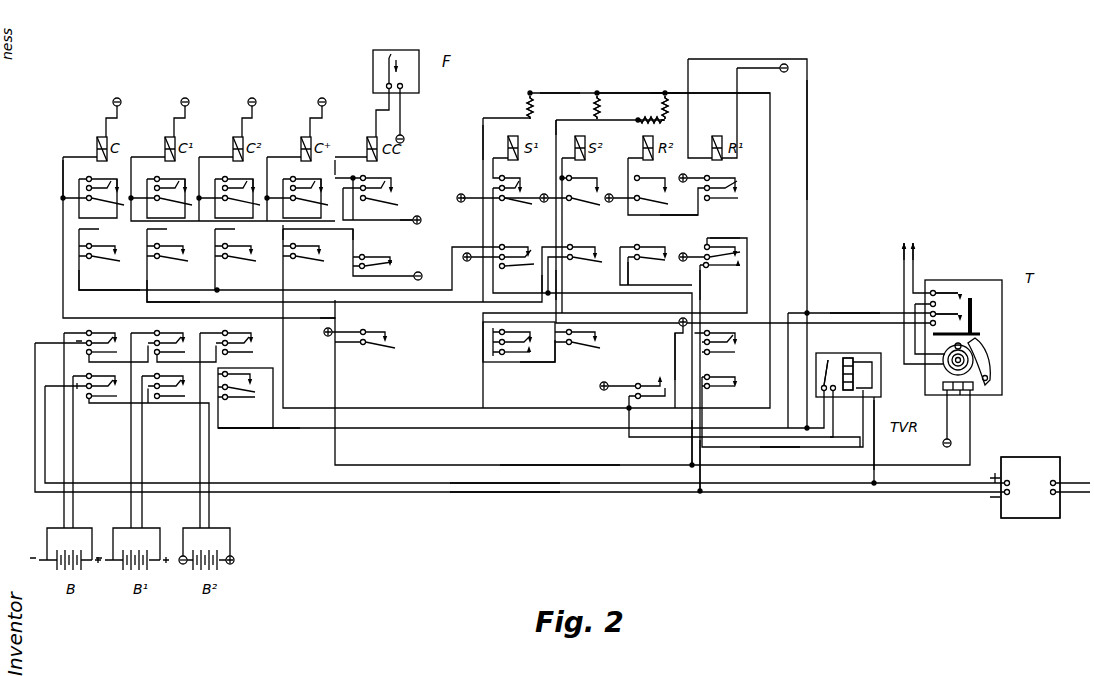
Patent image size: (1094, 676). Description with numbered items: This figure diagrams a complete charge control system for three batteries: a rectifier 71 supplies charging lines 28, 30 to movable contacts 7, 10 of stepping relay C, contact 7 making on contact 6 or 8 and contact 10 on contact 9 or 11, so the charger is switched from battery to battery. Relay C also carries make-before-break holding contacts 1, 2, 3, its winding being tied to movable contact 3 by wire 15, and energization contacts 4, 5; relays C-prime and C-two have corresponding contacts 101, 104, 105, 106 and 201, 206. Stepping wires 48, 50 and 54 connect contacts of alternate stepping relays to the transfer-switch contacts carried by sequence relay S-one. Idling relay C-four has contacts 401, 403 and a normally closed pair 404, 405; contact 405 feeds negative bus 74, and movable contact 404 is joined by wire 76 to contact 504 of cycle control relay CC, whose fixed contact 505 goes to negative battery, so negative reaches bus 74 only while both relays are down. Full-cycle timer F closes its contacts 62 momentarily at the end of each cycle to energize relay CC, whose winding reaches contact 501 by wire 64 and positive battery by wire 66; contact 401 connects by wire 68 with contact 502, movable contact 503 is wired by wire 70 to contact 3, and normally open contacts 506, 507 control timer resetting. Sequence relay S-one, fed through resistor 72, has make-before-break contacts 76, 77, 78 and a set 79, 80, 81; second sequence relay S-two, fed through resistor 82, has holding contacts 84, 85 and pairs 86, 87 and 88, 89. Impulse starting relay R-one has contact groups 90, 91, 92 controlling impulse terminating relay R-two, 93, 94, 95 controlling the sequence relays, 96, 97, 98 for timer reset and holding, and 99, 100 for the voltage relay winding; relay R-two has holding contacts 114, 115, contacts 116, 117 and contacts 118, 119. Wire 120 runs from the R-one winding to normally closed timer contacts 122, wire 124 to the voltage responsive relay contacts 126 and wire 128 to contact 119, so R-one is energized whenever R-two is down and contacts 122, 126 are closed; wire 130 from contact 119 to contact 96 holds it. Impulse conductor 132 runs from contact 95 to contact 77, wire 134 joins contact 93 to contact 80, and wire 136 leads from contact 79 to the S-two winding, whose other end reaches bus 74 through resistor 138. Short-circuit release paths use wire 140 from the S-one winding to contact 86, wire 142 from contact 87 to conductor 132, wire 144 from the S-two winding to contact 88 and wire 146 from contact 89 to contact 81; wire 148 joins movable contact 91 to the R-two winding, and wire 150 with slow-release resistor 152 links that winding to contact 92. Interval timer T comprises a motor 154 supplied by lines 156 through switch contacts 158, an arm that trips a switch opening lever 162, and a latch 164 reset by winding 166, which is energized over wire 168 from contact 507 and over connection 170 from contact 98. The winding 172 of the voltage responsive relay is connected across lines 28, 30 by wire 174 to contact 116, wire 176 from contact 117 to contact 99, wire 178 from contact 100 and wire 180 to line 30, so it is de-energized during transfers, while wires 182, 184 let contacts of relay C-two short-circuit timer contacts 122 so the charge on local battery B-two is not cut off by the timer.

The wire 15 is at (63, 180).
The contact 1 is at (114, 181).
The contact 2 is at (108, 194).
The movable contact 3 is at (118, 204).
The energization control contact 4 is at (108, 240).
The energization control contact 5 is at (112, 259).
The contact 6 is at (104, 334).
The movable contact 7 is at (109, 334).
The contact 8 is at (113, 355).
The contact 9 is at (101, 376).
The movable contact 10 is at (109, 386).
The contact 11 is at (106, 399).
The wire 48 is at (100, 290).
The wire 54 is at (162, 280).
The wire 50 is at (226, 280).
The contact 101 is at (164, 179).
The contact 104 is at (170, 249).
The contact 105 is at (184, 256).
The contact 106 is at (166, 332).
The contact 201 is at (232, 179).
The contact 206 is at (235, 332).
The contact 401 is at (320, 180).
The contact 403 is at (320, 206).
The movable contact 404 is at (297, 254).
The contact 405 is at (296, 270).
The contact 501 is at (392, 178).
The contact 502 is at (394, 192).
The movable contact 503 is at (392, 206).
The contact 504 is at (392, 255).
The fixed contact 505 is at (388, 276).
The contact 506 is at (388, 328).
The contact 507 is at (391, 350).
The contacts 62 is at (393, 50).
The wire 64 is at (363, 140).
The wire 66 is at (404, 220).
The wire 68 is at (282, 230).
The wire 70 is at (340, 310).
The resistor 72 is at (536, 104).
The negative bus 74 is at (554, 93).
The contact 76 is at (356, 233).
The contact 77 is at (522, 175).
The movable contact 78 is at (521, 206).
The contact 79 is at (484, 326).
The movable contact 80 is at (484, 341).
The contact 81 is at (483, 360).
The resistor 82 is at (600, 104).
The contact 84 is at (591, 174).
The contact 85 is at (590, 206).
The contact 86 is at (576, 242).
The contact 87 is at (590, 264).
The contact 88 is at (598, 332).
The contact 89 is at (598, 349).
The contact 90 is at (737, 177).
The movable contact 91 is at (739, 184).
The contact 92 is at (739, 200).
The contact 93 is at (729, 240).
The contact 94 is at (741, 253).
The contact 95 is at (743, 267).
The contact 96 is at (731, 330).
The contact 97 is at (734, 338).
The contact 98 is at (734, 350).
The contact 99 is at (734, 376).
The contact 100 is at (732, 383).
The contact 114 is at (651, 177).
The contact 115 is at (667, 205).
The contact 116 is at (656, 244).
The contact 117 is at (665, 260).
The contact 118 is at (666, 368).
The contact 119 is at (661, 380).
The wire 120 is at (814, 108).
The contacts 122 is at (978, 308).
The wire 124 is at (845, 313).
The contacts 126 is at (825, 352).
The wire 128 is at (821, 448).
The wire 130 is at (674, 349).
The impulse conductor 132 is at (708, 282).
The wire 134 is at (719, 230).
The wire 136 is at (564, 288).
The resistor 138 is at (677, 106).
The wire 140 is at (481, 151).
The wire 142 is at (540, 290).
The wire 144 is at (564, 109).
The wire 146 is at (536, 364).
The wire 148 is at (666, 215).
The wire 150 is at (626, 111).
The resistor 152 is at (665, 90).
The motor 154 is at (941, 380).
The lines 156 is at (926, 248).
The switch contacts 158 is at (951, 289).
The switch opening lever 162 is at (1002, 316).
The latch 164 is at (993, 378).
The reset winding 166 is at (968, 404).
The wire 168 is at (548, 465).
The connection 170 is at (671, 460).
The winding 172 is at (855, 354).
The wire 174 is at (699, 472).
The wire 176 is at (658, 272).
The wire 178 is at (776, 448).
The wire 180 is at (876, 455).
The wire 182 is at (270, 414).
The wire 184 is at (243, 432).
The wire 28 is at (488, 494).
The wire 30 is at (490, 482).
The rectifier 71 is at (1018, 526).